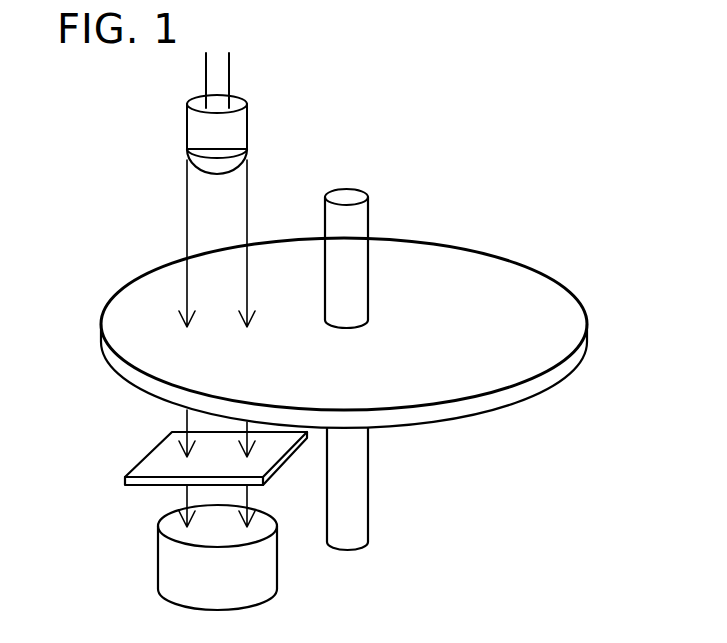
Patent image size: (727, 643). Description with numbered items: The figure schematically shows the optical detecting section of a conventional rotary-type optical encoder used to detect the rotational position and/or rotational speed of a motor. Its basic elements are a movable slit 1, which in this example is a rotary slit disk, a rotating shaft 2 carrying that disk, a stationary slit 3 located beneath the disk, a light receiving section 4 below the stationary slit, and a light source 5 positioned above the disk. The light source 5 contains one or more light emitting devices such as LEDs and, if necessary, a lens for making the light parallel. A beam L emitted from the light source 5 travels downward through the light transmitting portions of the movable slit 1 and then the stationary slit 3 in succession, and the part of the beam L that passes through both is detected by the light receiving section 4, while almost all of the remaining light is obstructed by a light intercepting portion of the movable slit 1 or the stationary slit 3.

The movable slit 1 is at (493, 288).
The rotating shaft 2 is at (362, 216).
The stationary slit 3 is at (157, 457).
The light receiving section 4 is at (165, 563).
The light source 5 is at (193, 130).
The beam L is at (247, 230).